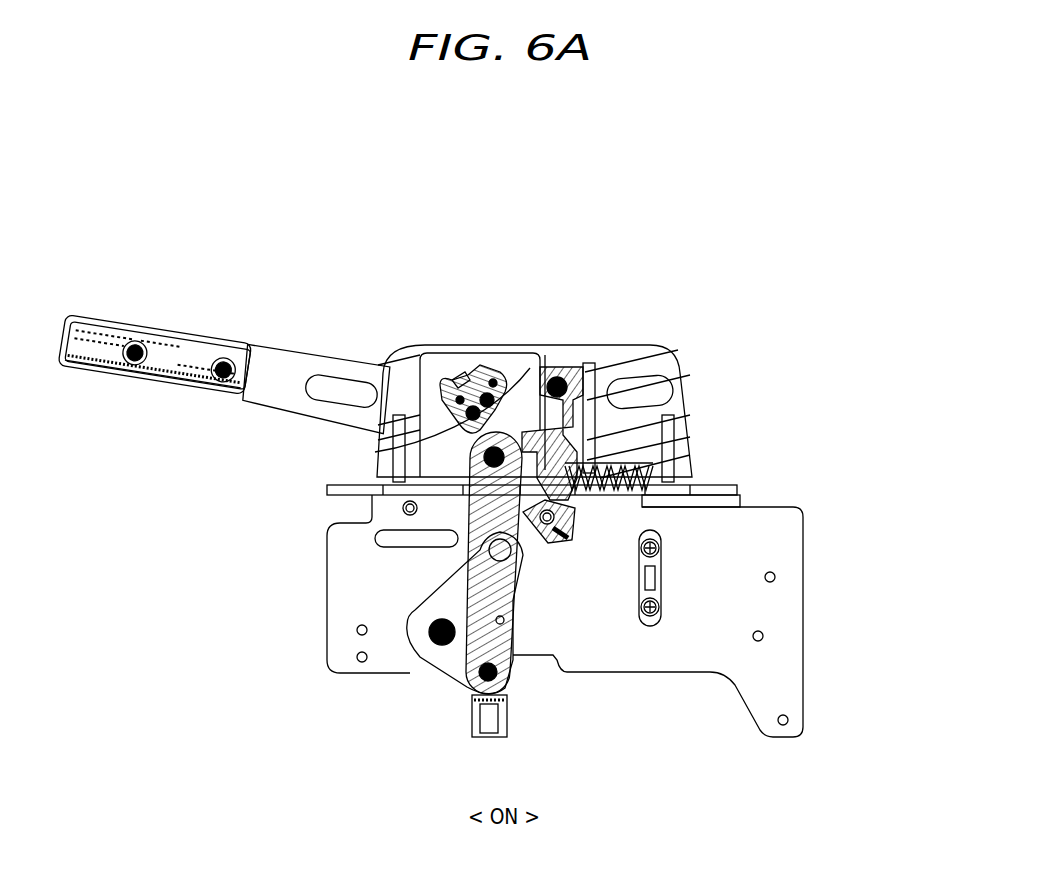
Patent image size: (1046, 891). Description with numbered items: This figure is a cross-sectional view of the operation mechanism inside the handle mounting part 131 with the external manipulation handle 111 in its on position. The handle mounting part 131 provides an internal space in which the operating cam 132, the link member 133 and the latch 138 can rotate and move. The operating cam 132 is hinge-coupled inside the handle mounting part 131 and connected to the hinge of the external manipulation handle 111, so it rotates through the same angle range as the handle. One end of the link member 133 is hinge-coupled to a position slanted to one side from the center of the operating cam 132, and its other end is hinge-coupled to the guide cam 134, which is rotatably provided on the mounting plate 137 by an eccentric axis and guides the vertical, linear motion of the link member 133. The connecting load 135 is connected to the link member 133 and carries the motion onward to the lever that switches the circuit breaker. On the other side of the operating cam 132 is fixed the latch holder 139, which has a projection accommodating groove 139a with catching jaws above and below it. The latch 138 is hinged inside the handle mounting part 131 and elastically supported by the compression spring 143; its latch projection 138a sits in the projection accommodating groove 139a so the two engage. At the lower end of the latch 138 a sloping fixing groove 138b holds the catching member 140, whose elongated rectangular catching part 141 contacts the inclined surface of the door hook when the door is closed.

The external manipulation handle 111 is at (283, 349).
The handle mounting part 131 is at (510, 350).
The operating cam 132 is at (544, 366).
The link member 133 is at (473, 560).
The guide cam 134 is at (445, 660).
The connecting load 135 is at (507, 716).
The mounting plate 137 is at (668, 673).
The latch 138 is at (585, 438).
The latch projection 138a is at (585, 393).
The fixing groove 138b is at (560, 543).
The latch holder 139 is at (455, 408).
The projection accommodating groove 139a is at (465, 372).
The catching member 140 is at (736, 578).
The catching part 141 is at (563, 535).
The compression spring 143 is at (645, 517).